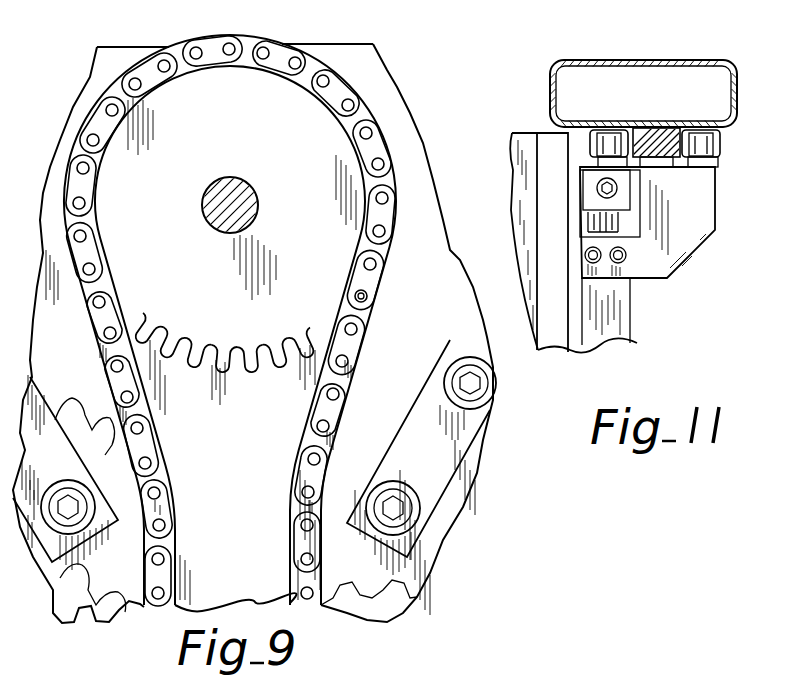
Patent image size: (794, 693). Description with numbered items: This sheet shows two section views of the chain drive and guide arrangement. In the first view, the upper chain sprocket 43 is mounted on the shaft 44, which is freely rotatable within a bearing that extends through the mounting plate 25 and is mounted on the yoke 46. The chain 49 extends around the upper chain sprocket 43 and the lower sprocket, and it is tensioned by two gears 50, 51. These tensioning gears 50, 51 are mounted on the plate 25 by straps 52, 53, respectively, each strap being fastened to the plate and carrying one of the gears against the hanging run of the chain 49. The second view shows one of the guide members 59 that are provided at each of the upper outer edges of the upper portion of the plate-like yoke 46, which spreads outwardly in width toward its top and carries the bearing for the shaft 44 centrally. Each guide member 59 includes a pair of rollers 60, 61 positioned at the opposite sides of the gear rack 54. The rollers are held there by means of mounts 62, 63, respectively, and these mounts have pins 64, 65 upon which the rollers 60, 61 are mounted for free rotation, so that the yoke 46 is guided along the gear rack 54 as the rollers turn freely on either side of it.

In FIG. 9, the mounting plate 25 is at (390, 110).
In FIG. 11, the mounting plate 25 is at (548, 214).
In FIG. 9, the upper chain sprocket 43 is at (238, 85).
In FIG. 9, the shaft 44 is at (230, 205).
In FIG. 9, the chain 49 is at (363, 312).
In FIG. 9, the gear 50 is at (90, 625).
In FIG. 9, the gear 51 is at (417, 618).
In FIG. 9, the strap 52 is at (50, 420).
In FIG. 9, the strap 53 is at (427, 410).
In FIG. 11, the gear rack 54 is at (637, 128).
In FIG. 11, the guide member 59 is at (668, 279).
In FIG. 11, the roller 60 is at (608, 147).
In FIG. 11, the roller 61 is at (688, 133).
In FIG. 11, the mount 62 is at (588, 188).
In FIG. 11, the mount 63 is at (688, 236).
In FIG. 11, the pin 64 is at (602, 163).
In FIG. 11, the pin 65 is at (713, 168).
In FIG. 11, the yoke 46 is at (617, 322).